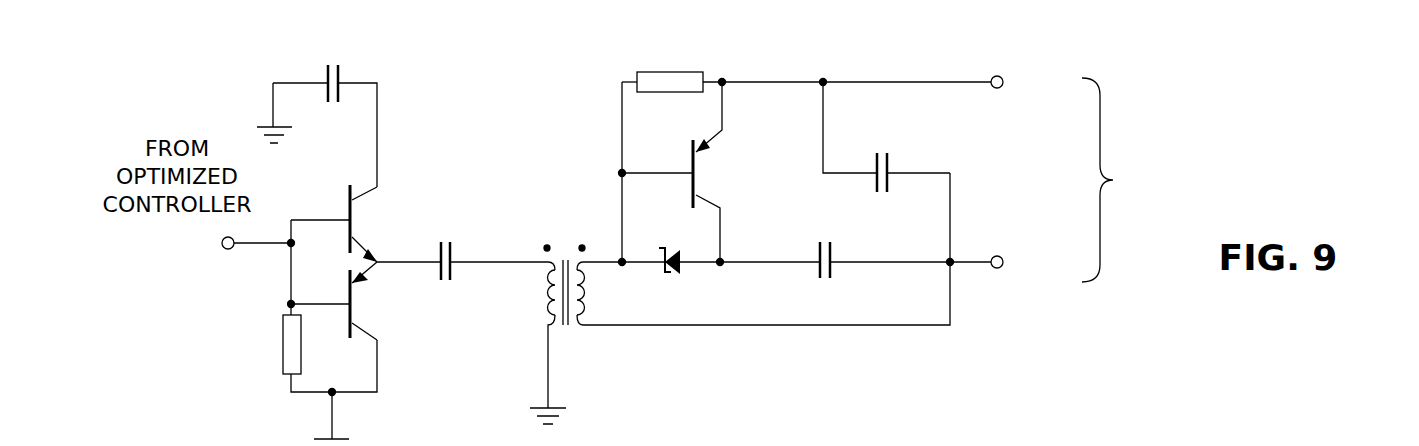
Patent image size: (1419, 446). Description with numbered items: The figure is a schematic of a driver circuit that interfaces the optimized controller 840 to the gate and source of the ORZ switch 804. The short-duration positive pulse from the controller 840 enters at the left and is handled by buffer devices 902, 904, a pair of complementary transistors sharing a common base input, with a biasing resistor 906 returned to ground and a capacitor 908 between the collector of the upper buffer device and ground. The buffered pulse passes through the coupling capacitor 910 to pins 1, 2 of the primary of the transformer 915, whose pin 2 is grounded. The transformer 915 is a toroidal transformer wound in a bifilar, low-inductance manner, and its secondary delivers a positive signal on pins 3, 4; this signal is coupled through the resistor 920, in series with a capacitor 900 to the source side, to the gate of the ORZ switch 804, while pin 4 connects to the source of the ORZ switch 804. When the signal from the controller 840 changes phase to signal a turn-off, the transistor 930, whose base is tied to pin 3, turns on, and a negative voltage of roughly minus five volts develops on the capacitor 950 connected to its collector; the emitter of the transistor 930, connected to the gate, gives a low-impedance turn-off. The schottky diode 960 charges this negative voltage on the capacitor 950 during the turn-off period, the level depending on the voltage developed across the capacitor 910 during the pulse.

The controller 840 is at (222, 243).
The buffer device 902 is at (352, 212).
The buffer device 904 is at (352, 297).
The resistor 906 is at (283, 349).
The capacitor 908 is at (338, 104).
The capacitor 910 is at (450, 246).
The transformer T1 915 is at (560, 295).
The resistor 920 is at (660, 70).
The transistor 930 is at (697, 172).
The capacitor 900 is at (887, 194).
The capacitor 950 is at (833, 269).
The schottky diode 960 is at (672, 276).
The ORZ switch 804 is at (1096, 185).
The pin 1 of the transformer primary 1 is at (541, 258).
The pin 2 of the transformer primary 2 is at (548, 331).
The pin 3 of the transformer secondary 3 is at (588, 258).
The pin 4 of the transformer secondary 4 is at (594, 327).